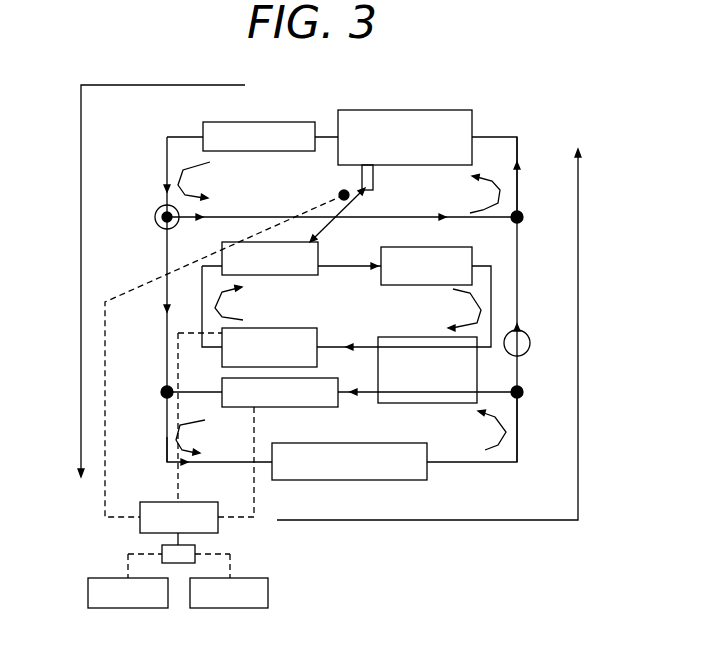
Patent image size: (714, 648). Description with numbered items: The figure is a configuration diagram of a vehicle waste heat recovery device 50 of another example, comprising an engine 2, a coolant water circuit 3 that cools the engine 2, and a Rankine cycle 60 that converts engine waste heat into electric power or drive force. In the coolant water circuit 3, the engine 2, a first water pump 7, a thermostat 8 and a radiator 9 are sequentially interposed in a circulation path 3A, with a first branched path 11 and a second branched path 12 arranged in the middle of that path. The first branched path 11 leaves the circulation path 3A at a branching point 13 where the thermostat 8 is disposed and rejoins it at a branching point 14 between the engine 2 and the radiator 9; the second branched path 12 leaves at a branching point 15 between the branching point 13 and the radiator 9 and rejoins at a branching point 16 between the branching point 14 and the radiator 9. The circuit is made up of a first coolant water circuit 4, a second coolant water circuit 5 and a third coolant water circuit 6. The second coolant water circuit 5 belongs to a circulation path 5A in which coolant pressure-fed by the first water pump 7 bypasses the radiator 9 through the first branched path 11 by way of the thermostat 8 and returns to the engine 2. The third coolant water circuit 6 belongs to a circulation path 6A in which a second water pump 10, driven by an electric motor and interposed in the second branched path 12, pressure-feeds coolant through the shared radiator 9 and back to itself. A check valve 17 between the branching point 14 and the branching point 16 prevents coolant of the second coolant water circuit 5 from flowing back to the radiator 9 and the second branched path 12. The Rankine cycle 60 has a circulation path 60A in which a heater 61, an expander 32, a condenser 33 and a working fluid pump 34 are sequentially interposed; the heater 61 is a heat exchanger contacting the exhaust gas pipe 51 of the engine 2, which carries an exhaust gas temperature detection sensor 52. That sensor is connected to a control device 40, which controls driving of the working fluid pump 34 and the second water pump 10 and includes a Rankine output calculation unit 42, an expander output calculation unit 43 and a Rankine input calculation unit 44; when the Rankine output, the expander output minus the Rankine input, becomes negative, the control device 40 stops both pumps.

The engine 2 is at (435, 132).
The coolant water circuit 3 is at (521, 109).
The circulation path 3A is at (80, 326).
The first coolant water circuit 4 is at (140, 449).
The second coolant water circuit 5 is at (541, 173).
The circulation path 5A is at (490, 183).
The third coolant water circuit 6 is at (539, 427).
The circulation path 6A is at (482, 429).
The first water pump 7 is at (236, 137).
The thermostat 8 is at (155, 210).
The radiator 9 is at (387, 462).
The second water pump 10 is at (323, 396).
The first branched path 11 is at (390, 216).
The second branched path 12 is at (195, 393).
The branching point 13 is at (160, 227).
The branching point 14 is at (530, 228).
The branching point 15 is at (153, 401).
The branching point 16 is at (530, 393).
The check valve 17 is at (531, 344).
The expander 32 is at (466, 250).
The condenser 33 is at (470, 381).
The working fluid pump 34 is at (222, 354).
The control device 40 is at (165, 510).
The Rankine output calculation unit 42 is at (163, 553).
The expander output calculation unit 43 is at (108, 592).
The Rankine input calculation unit 44 is at (237, 597).
The vehicle waste heat recovery device 50 is at (370, 81).
The exhaust gas pipe 51 is at (358, 177).
The exhaust gas temperature detection sensor 52 is at (236, 349).
The Rankine cycle 60 is at (381, 306).
The circulation path 60A is at (450, 310).
The heater 61 is at (290, 274).